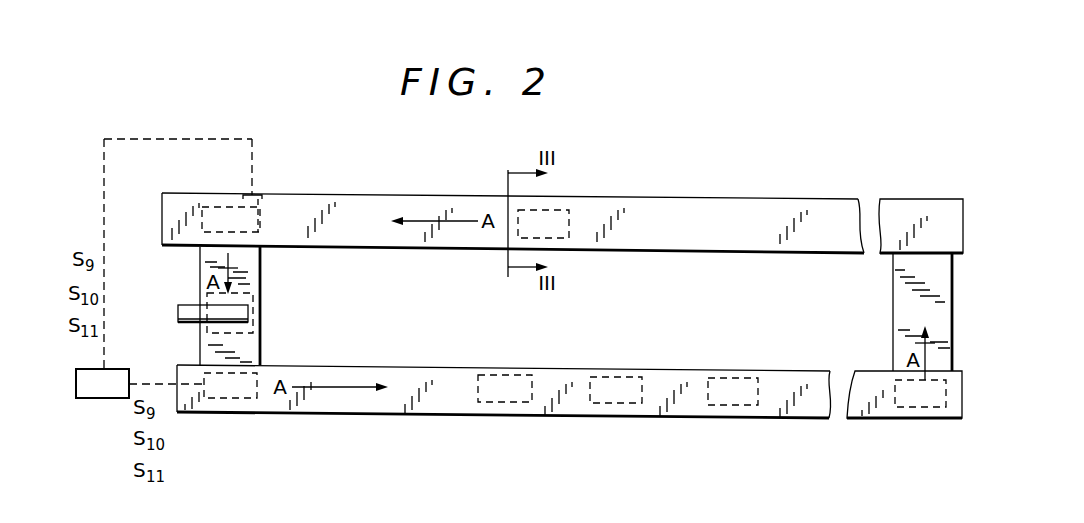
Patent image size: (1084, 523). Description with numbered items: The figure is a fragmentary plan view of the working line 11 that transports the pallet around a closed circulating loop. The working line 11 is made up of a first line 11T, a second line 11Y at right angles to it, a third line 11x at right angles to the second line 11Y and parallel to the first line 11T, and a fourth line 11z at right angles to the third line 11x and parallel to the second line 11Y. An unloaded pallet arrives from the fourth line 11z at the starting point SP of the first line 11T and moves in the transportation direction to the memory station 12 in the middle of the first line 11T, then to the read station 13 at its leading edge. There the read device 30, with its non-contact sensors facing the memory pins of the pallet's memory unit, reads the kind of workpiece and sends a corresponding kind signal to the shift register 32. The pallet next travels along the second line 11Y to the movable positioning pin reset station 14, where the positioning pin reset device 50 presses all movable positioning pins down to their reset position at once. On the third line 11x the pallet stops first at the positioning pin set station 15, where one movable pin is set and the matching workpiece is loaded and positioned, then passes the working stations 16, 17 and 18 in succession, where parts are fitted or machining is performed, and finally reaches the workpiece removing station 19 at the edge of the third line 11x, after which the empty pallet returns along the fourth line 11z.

The working line 11 is at (363, 193).
The first line 11T is at (693, 199).
The third line 11x is at (340, 416).
The second line 11Y is at (263, 310).
The fourth line 11z is at (895, 304).
The starting point SP is at (920, 211).
The memory station 12 is at (569, 212).
The read station 13 is at (211, 206).
The movable positioning pin reset station 14 is at (262, 338).
The positioning pin set station 15 is at (225, 400).
The working station 16 is at (512, 403).
The working station 17 is at (625, 405).
The working station 18 is at (745, 407).
The workpiece removing station 19 is at (930, 410).
The read device 30 is at (259, 194).
The shift register 32 is at (85, 398).
The positioning pin reset device 50 is at (178, 312).